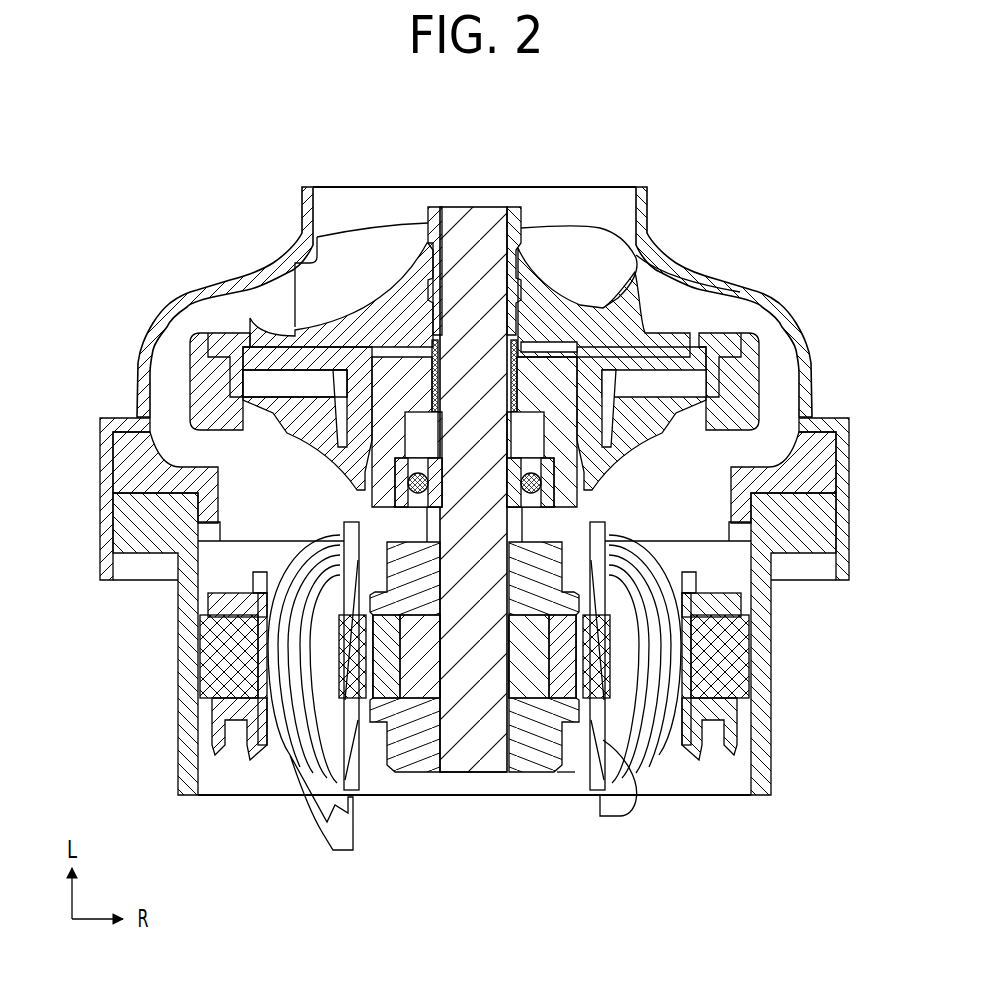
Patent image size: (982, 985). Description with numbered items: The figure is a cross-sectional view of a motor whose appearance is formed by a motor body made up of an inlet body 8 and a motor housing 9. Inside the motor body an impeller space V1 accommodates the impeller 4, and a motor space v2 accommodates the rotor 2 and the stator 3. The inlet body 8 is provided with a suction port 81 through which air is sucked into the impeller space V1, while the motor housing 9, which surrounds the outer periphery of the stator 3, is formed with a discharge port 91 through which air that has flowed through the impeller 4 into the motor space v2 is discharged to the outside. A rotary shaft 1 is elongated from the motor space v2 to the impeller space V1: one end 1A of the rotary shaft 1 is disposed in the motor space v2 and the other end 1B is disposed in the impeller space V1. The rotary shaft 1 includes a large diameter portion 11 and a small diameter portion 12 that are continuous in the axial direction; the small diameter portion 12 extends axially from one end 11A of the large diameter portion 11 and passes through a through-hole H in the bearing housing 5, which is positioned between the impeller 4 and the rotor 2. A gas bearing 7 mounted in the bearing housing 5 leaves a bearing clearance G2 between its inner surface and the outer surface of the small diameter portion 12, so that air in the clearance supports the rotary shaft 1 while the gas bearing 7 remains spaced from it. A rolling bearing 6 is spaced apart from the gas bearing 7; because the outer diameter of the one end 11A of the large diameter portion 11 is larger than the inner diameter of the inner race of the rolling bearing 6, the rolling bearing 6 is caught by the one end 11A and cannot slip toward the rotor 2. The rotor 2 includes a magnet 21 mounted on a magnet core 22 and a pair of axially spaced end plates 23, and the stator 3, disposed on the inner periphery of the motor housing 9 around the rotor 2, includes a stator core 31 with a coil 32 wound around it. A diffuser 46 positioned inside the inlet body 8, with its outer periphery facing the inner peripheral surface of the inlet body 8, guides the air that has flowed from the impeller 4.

The rotary shaft 1 is at (492, 188).
The one end of the rotary shaft 1A is at (450, 774).
The other end of the rotary shaft 1B is at (449, 205).
The small diameter portion 12 is at (480, 222).
The impeller 4 is at (553, 350).
The suction port 81 is at (569, 190).
The bearing housing 5 is at (600, 275).
The impeller space V1 is at (650, 285).
The through-hole H is at (320, 300).
The bearing clearance G2 is at (400, 393).
The diffuser 46 is at (740, 350).
The gas bearing 7 is at (190, 413).
The inlet body 8 is at (842, 442).
The rolling bearing 6 is at (230, 470).
The one end of the large diameter portion 11A is at (340, 522).
The motor housing 9 is at (758, 605).
The rotor 2 is at (229, 666).
The magnet 21 is at (235, 650).
The magnet core 22 is at (350, 660).
The end plate 23 is at (230, 593).
The stator 3 is at (720, 666).
The stator core 31 is at (735, 650).
The coil 32 is at (640, 705).
The discharge port 91 is at (396, 797).
The large diameter portion 11 is at (492, 760).
The motor space v2 is at (566, 773).